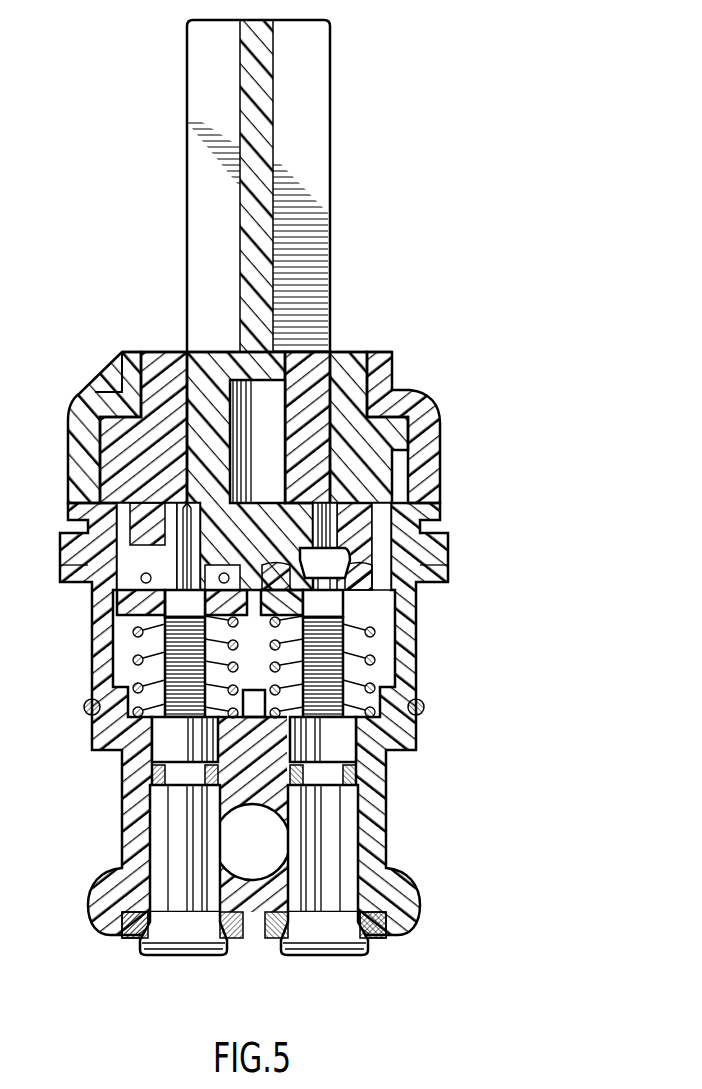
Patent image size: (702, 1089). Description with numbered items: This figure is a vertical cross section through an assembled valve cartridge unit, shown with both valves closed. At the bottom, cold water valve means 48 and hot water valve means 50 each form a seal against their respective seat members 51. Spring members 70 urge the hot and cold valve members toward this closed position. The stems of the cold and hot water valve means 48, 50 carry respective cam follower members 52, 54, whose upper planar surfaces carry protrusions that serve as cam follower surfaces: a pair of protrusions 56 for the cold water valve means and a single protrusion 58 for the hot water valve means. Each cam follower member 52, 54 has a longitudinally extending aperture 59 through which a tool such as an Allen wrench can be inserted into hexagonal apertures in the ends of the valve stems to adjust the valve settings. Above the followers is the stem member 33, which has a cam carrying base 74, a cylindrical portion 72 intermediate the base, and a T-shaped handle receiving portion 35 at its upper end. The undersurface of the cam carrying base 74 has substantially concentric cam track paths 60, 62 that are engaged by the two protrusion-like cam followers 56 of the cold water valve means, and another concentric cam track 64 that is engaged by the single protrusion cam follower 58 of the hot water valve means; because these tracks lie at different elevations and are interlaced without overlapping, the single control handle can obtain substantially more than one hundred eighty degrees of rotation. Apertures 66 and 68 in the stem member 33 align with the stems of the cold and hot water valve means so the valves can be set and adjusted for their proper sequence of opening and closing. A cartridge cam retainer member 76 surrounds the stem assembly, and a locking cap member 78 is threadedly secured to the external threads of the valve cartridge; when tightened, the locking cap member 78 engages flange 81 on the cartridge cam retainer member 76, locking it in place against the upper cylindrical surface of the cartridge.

The stem member 33 is at (336, 174).
The T-shaped handle receiving portion 35 is at (313, 223).
The cold water valve means 48 is at (350, 948).
The hot water valve means 50 is at (160, 955).
The seat members 51 is at (122, 942).
The cam follower member 52 is at (395, 605).
The cam follower member 54 is at (125, 602).
The cam follower surfaces 56 is at (280, 580).
The cam follower surface 58 is at (200, 548).
The longitudinally extending aperture 59 is at (337, 590).
The cam track path 60 is at (146, 573).
The cam track path 62 is at (232, 527).
The cam track 64 is at (308, 566).
The aperture 66 is at (333, 503).
The aperture 68 is at (180, 505).
The spring members 70 is at (133, 636).
The cylindrical portion 72 is at (312, 372).
The cam carrying base 74 is at (320, 67).
The cartridge cam retainer member 76 is at (166, 340).
The locking cap member 78 is at (133, 358).
The flange 81 is at (400, 415).